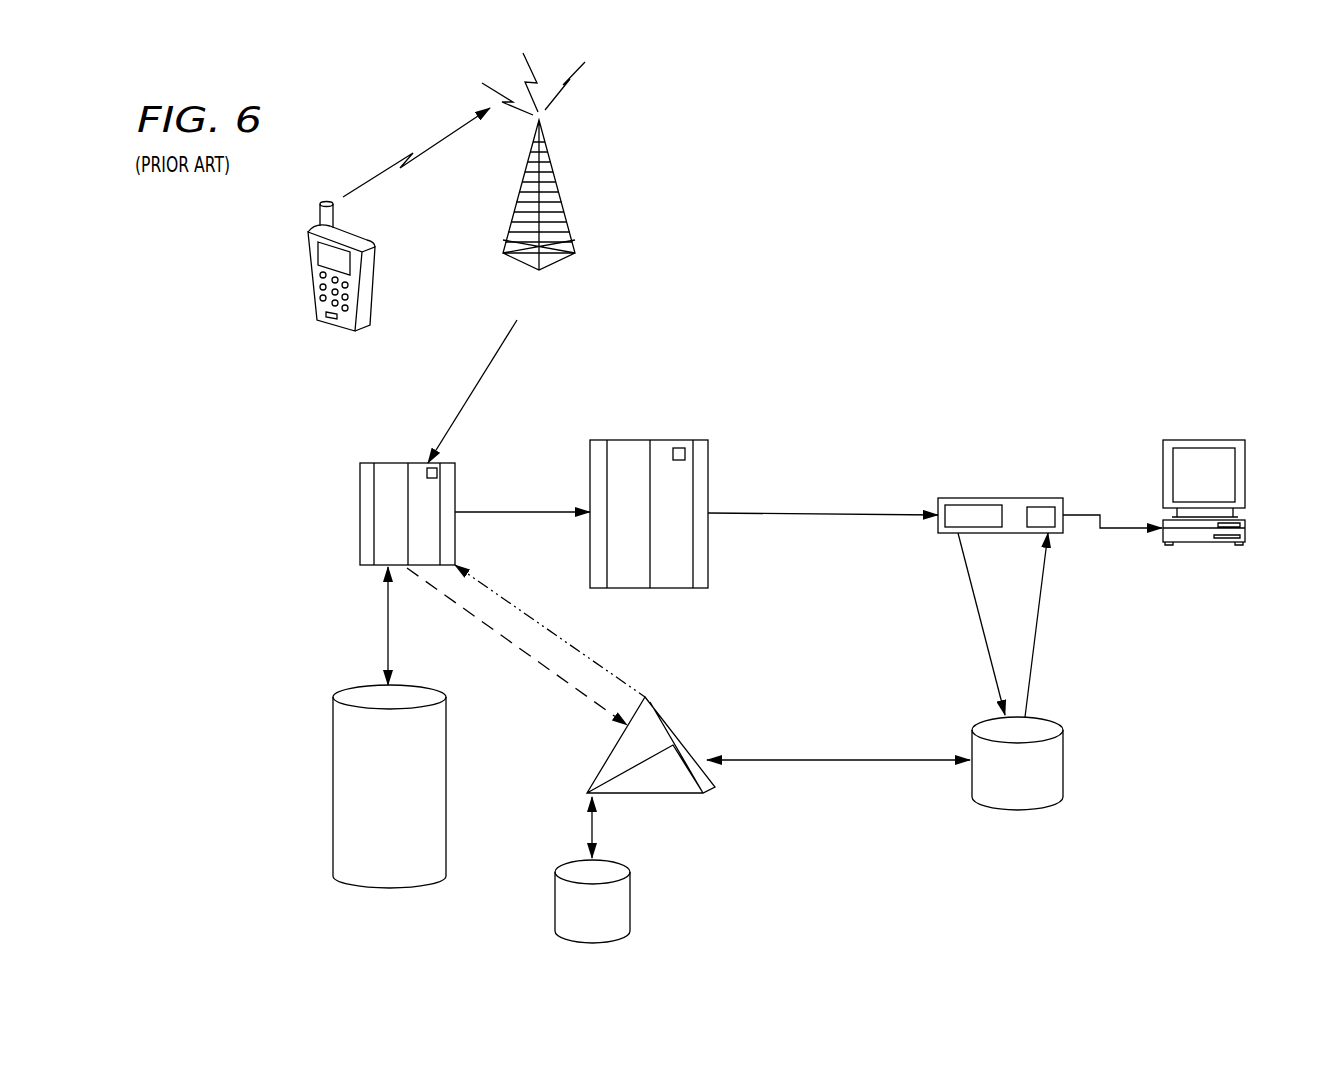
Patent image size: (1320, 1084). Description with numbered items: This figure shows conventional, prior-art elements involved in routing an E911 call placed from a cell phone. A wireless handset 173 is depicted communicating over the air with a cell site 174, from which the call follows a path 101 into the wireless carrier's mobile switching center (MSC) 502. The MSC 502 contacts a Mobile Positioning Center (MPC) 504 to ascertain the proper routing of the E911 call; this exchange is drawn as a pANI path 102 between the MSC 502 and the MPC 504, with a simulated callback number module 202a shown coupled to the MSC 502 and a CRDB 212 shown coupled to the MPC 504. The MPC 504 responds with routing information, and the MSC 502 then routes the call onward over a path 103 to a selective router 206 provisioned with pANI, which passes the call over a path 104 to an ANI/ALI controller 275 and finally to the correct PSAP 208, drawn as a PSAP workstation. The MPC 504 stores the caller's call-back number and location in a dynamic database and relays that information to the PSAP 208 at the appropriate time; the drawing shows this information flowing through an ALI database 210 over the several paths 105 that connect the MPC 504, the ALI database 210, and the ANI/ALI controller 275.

The wireless handset 173 is at (399, 219).
The cell site 174 is at (551, 181).
The call path from cell site to MSC 101 is at (472, 391).
The mobile switching center 502 is at (407, 495).
The call path from MSC to selective router 103 is at (522, 513).
The selective router provisioned with pANI 206 is at (660, 476).
The call path from selective router to ANI/ALI controller 104 is at (823, 516).
The ANI/ALI controller 275 is at (1042, 508).
The PSAP 208 is at (1223, 515).
The ALI query/response path 105 is at (895, 654).
The pANI path between MSC and MPC 102 is at (526, 652).
The mobile positioning center 504 is at (656, 765).
The simulated callback number module 202a is at (389, 727).
The ALI database 210 is at (1017, 776).
The CRDB database 212 is at (618, 870).